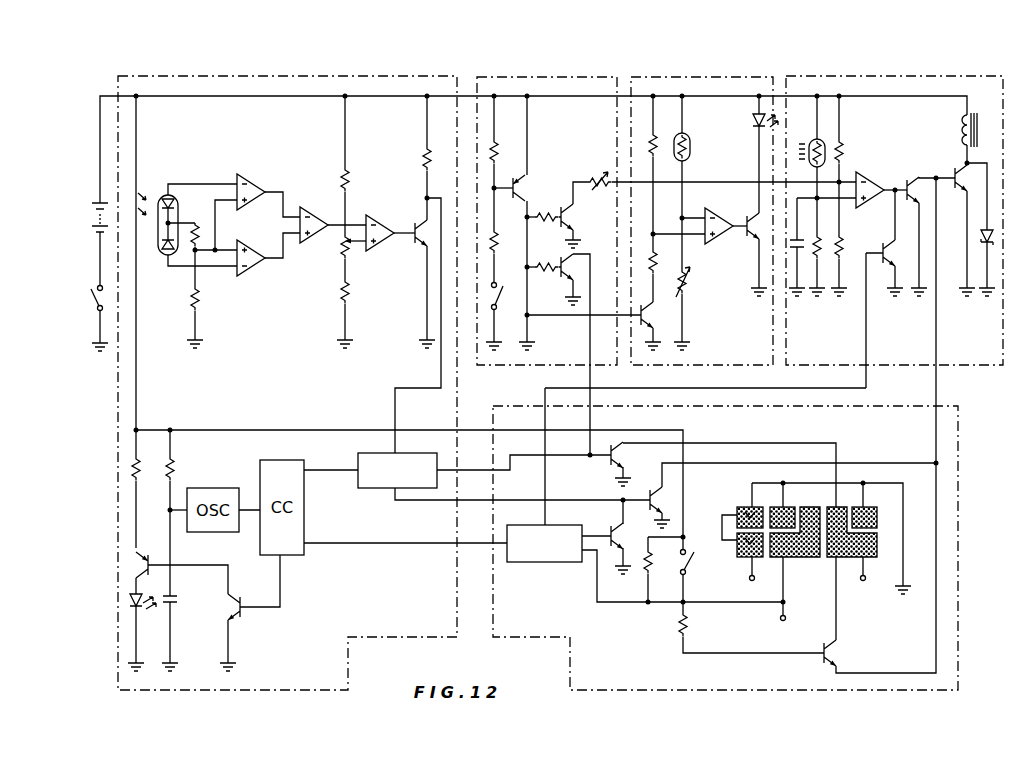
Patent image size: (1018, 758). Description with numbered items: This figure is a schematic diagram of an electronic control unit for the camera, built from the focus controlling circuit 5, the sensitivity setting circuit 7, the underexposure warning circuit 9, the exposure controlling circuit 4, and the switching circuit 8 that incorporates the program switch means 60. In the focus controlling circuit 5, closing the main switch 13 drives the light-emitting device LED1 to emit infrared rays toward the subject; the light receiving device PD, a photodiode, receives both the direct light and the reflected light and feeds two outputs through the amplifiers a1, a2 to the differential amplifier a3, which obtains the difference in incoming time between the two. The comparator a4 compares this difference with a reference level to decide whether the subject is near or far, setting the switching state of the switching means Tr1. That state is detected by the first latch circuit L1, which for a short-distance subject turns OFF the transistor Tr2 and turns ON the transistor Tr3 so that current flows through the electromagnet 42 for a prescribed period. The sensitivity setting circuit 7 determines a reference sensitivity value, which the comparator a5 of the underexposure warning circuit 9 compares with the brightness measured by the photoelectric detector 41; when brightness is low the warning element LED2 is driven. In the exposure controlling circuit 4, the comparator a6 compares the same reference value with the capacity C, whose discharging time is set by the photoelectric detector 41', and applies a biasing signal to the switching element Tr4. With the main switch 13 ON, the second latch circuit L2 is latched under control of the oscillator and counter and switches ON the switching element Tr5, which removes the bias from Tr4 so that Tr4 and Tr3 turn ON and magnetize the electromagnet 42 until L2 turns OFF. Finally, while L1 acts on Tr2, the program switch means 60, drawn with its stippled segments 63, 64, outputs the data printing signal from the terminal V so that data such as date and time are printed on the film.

The focus controlling circuit 5 is at (323, 75).
The sensitivity setting circuit 7 is at (530, 77).
The underexposure warning circuit 9 is at (714, 77).
The exposure controlling circuit 4 is at (908, 76).
The switching circuit 8 is at (960, 455).
The main switch 13 is at (103, 299).
The photoelectric detector 41 is at (707, 153).
The photoelectric detector 41' is at (835, 136).
The electromagnet 42 is at (965, 128).
The program switch means 60 is at (855, 546).
The display segment with indicator 63 is at (724, 541).
The display segment 64 is at (808, 563).
The light receiving device PD is at (162, 193).
The amplifier a1 is at (248, 178).
The amplifier a2 is at (258, 270).
The differential amplifier a3 is at (315, 238).
The comparator a4 is at (380, 250).
The comparator a5 is at (724, 238).
The comparator a6 is at (875, 203).
The switching means Tr1 is at (412, 227).
The transistor Tr2 is at (667, 503).
The transistor Tr3 is at (952, 173).
The switching element Tr4 is at (905, 183).
The switching element Tr5 is at (882, 266).
The light-emitting device LED1 is at (142, 602).
The warning element LED2 is at (753, 123).
The first latch circuit L1 is at (375, 489).
The second latch circuit L2 is at (557, 563).
The capacity C is at (789, 268).
The terminal V is at (783, 601).